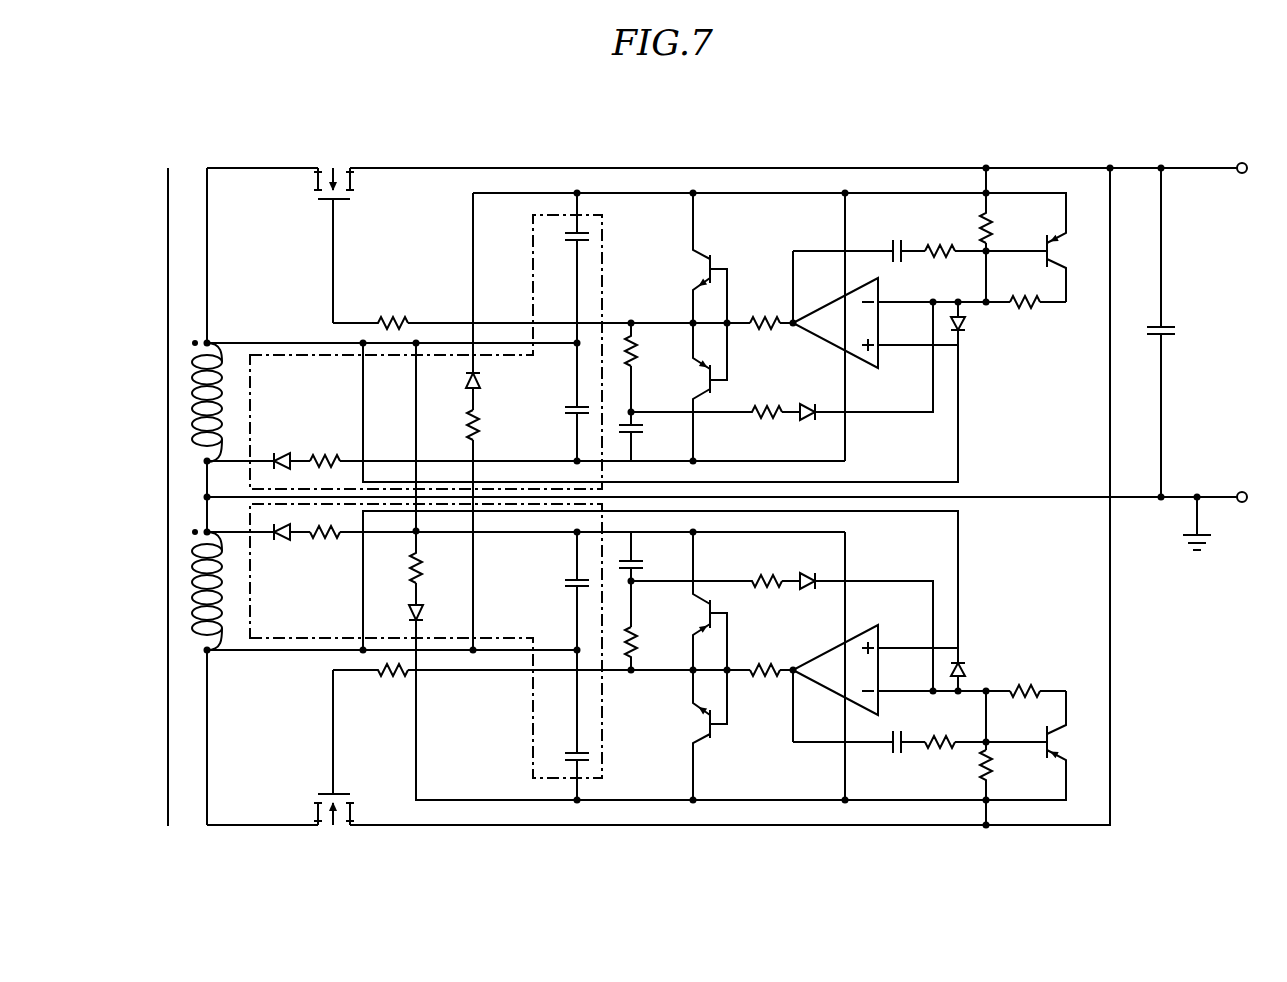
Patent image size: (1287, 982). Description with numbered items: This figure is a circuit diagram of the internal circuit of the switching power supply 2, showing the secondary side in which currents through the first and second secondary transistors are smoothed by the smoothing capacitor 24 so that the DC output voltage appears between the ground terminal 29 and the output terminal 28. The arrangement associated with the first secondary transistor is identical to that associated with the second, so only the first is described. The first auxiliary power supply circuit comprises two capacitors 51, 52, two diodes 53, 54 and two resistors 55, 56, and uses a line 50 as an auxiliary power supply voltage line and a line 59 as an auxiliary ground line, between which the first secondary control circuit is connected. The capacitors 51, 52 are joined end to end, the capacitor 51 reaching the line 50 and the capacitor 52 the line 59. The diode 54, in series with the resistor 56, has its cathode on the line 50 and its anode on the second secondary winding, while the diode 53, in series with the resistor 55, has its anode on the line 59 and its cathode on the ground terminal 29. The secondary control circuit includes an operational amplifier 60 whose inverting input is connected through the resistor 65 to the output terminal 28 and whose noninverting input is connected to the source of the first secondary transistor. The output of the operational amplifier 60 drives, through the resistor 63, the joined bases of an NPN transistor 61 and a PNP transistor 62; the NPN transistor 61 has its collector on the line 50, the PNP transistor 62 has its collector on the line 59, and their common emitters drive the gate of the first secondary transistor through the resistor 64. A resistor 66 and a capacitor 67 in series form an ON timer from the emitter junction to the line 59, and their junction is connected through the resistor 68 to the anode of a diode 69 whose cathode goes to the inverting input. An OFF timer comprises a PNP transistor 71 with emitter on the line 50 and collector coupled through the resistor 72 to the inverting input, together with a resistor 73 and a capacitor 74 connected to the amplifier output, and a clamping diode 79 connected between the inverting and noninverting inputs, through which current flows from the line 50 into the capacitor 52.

The switching power supply 2 is at (134, 139).
The smoothing capacitor 24 is at (1178, 331).
The output terminal 28 is at (1240, 164).
The ground terminal 29 is at (1242, 504).
The auxiliary power supply voltage line 50 is at (527, 158).
The capacitor 51 is at (592, 233).
The capacitor 52 is at (565, 411).
The diode 53 is at (280, 454).
The diode 54 is at (467, 381).
The resistor 55 is at (325, 454).
The resistor 56 is at (480, 426).
The auxiliary ground line 59 is at (845, 447).
The operational amplifier 60 is at (831, 306).
The NPN transistor 61 is at (711, 257).
The PNP transistor 62 is at (722, 388).
The resistor 63 is at (765, 317).
The resistor 64 is at (393, 316).
The resistor 65 is at (988, 228).
The resistor 66 is at (633, 353).
The capacitor 67 is at (634, 412).
The resistor 68 is at (758, 420).
The diode 69 is at (806, 420).
The PNP transistor 71 is at (1055, 238).
The resistor 72 is at (1028, 308).
The resistor 73 is at (941, 244).
The capacitor 74 is at (896, 244).
The clamping diode 79 is at (962, 333).